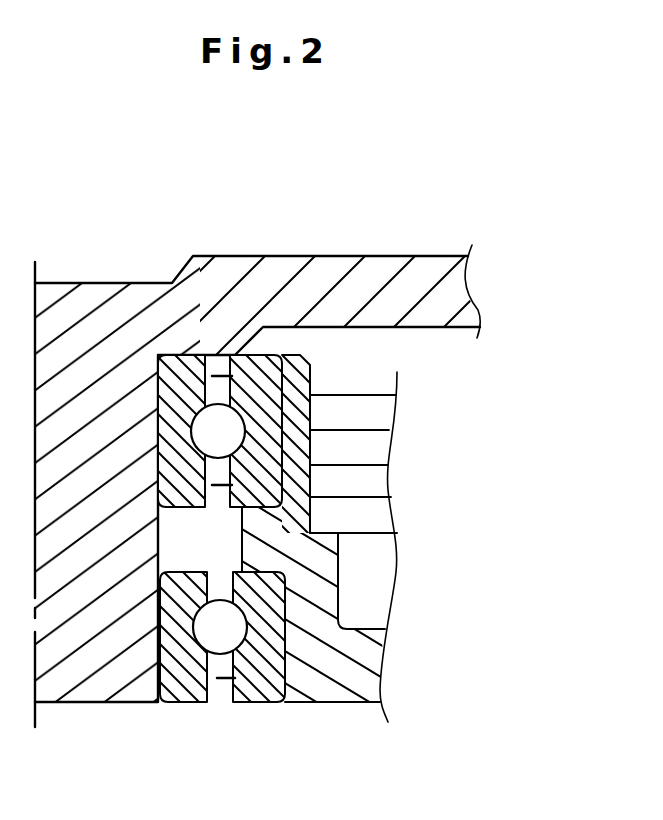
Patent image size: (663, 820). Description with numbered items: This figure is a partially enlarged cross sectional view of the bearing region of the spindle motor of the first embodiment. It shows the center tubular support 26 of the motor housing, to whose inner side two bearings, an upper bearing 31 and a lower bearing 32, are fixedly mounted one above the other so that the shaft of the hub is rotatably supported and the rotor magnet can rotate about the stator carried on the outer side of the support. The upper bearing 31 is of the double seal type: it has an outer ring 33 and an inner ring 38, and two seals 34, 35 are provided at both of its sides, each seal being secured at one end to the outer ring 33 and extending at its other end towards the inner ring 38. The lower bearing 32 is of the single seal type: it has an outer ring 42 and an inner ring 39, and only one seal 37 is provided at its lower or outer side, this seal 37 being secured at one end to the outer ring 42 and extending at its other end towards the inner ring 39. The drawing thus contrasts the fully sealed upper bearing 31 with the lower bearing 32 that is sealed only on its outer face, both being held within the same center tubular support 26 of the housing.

The center tubular support 26 is at (316, 568).
The upper bearing 31 is at (257, 354).
The lower bearing 32 is at (205, 680).
The outer ring 33 is at (283, 424).
The seal 34 is at (232, 376).
The seal 35 is at (232, 485).
The seal 37 is at (217, 678).
The inner ring 38 is at (165, 413).
The inner ring 39 is at (167, 638).
The outer ring 42 is at (283, 627).